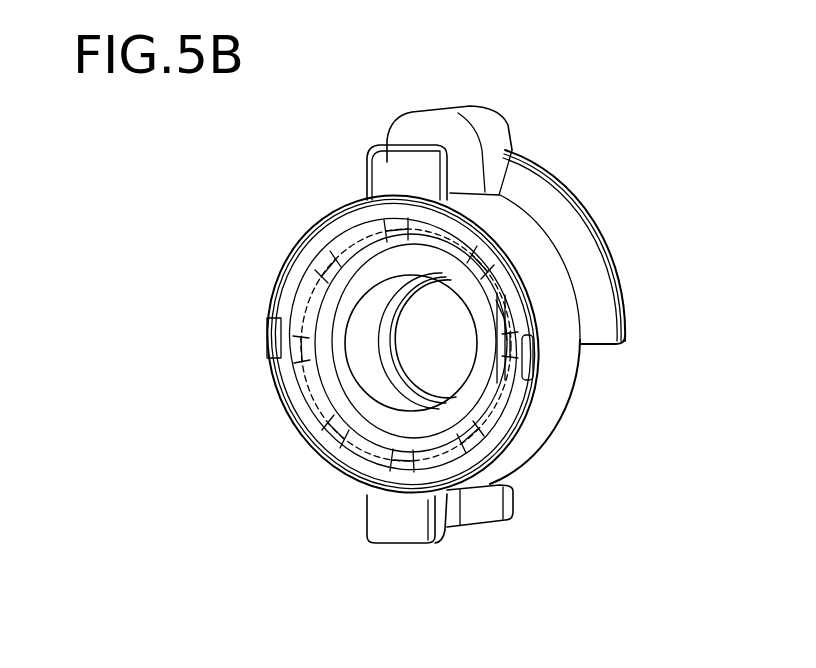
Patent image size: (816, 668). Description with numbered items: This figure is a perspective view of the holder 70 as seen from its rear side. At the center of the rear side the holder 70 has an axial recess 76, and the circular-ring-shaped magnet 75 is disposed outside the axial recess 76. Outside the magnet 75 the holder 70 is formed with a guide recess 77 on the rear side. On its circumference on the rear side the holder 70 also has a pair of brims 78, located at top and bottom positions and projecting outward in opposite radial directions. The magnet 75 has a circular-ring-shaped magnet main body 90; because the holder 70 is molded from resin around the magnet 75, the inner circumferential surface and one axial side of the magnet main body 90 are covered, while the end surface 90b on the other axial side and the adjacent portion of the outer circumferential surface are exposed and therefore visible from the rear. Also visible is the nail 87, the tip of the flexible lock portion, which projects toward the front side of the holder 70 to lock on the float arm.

The holder 70 is at (598, 158).
The magnet 75 is at (495, 422).
The axial recess 76 is at (360, 378).
The guide recess 77 is at (331, 435).
The brims 78 is at (368, 150).
The nail 87 is at (468, 522).
The magnet main body 90 is at (495, 324).
The end surface 90b is at (323, 328).